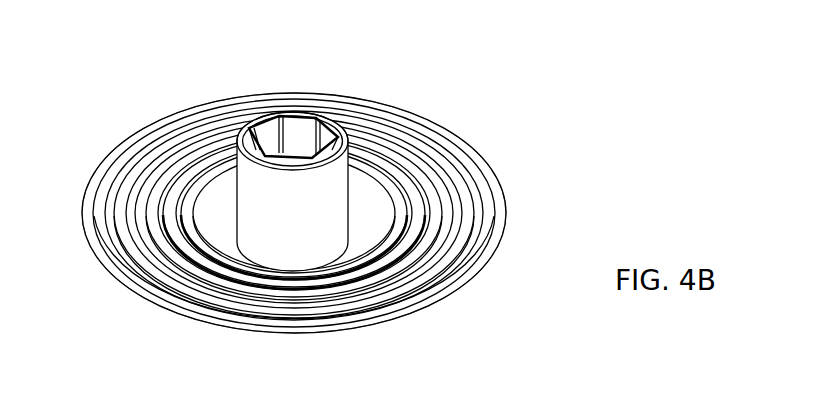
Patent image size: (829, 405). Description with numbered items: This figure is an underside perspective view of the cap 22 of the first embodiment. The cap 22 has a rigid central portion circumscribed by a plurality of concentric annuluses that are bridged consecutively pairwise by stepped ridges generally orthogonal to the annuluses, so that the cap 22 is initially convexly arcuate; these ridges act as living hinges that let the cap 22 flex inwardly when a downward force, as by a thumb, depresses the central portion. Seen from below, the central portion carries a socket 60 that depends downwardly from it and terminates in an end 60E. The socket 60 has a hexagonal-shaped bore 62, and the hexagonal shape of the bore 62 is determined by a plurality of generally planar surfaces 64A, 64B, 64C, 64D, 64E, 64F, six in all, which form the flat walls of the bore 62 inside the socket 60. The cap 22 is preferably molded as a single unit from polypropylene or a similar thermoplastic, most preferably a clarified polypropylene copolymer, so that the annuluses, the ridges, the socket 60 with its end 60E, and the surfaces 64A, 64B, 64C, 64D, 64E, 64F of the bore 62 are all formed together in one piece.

The cap 22 is at (164, 76).
The socket 60 is at (352, 123).
The end 60E is at (281, 116).
The hexagonal-shaped bore 62 is at (317, 120).
The generally planar surface 64A is at (273, 134).
The generally planar surface 64B is at (306, 138).
The generally planar surface 64C is at (407, 160).
The generally planar surface 64D is at (350, 197).
The generally planar surface 64E is at (288, 172).
The generally planar surface 64F is at (247, 171).